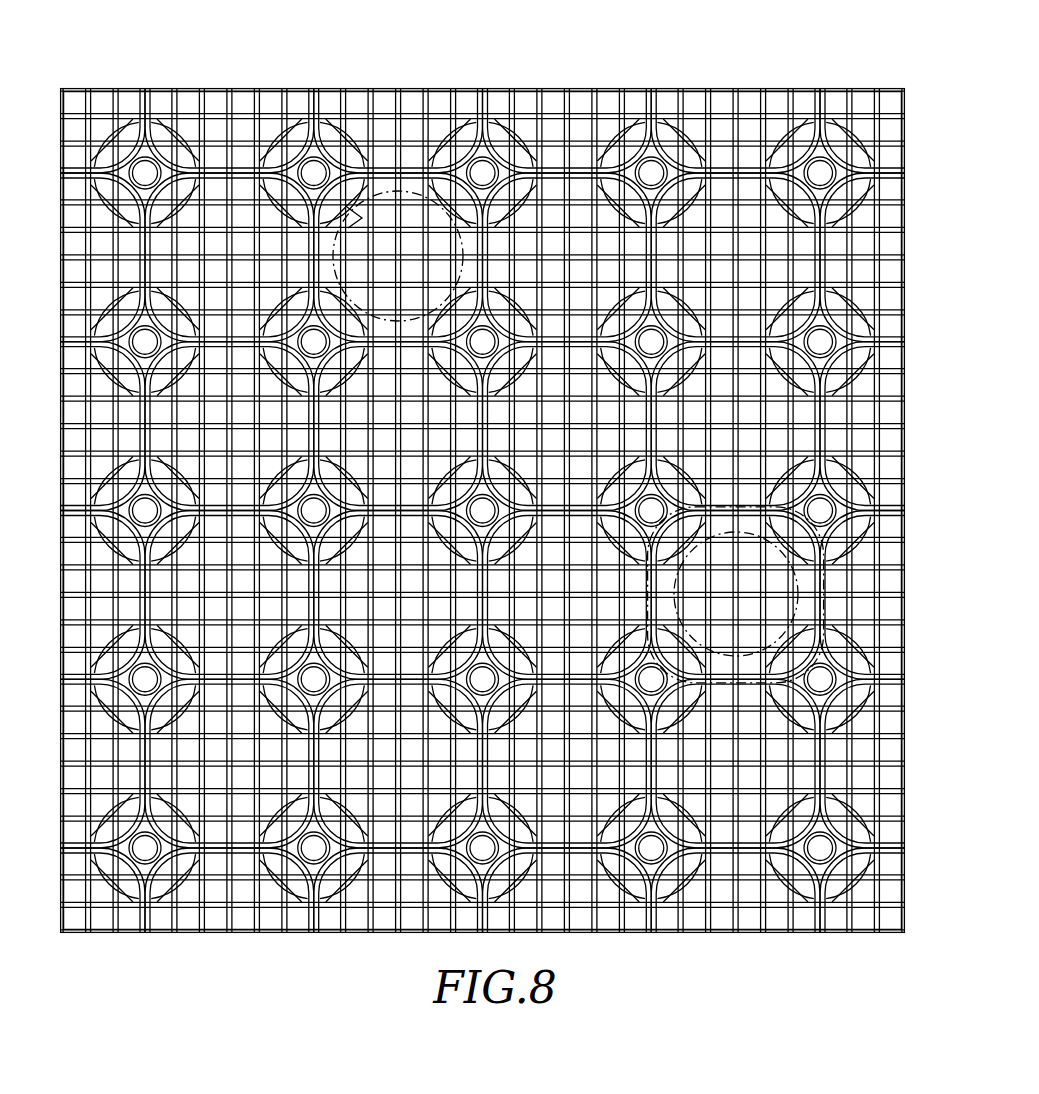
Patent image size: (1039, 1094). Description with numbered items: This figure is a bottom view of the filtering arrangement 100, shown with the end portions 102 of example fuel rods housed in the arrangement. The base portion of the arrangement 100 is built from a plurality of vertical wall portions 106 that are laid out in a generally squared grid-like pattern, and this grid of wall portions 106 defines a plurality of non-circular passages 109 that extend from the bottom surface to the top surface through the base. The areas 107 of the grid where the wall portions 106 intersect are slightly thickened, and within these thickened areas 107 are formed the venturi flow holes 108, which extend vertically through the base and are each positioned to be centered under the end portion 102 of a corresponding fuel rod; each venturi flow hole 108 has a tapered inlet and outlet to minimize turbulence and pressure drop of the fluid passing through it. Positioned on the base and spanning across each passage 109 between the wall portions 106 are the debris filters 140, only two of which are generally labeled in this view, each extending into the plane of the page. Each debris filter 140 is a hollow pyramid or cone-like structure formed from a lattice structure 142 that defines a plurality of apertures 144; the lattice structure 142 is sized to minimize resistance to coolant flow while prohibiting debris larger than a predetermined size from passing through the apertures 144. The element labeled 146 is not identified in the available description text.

The filtering arrangement 100 is at (494, 508).
The end portions of fuel rods 102 is at (308, 508).
The vertical wall portions 106 is at (172, 523).
The areas where wall portions intersect 107 is at (292, 513).
The venturi flow holes 108 is at (273, 471).
The non-circular passages 109 is at (218, 170).
The debris filters 140 is at (350, 200).
The lattice structure 142 is at (412, 232).
The apertures 144 is at (347, 207).
The brace 146 is at (295, 395).